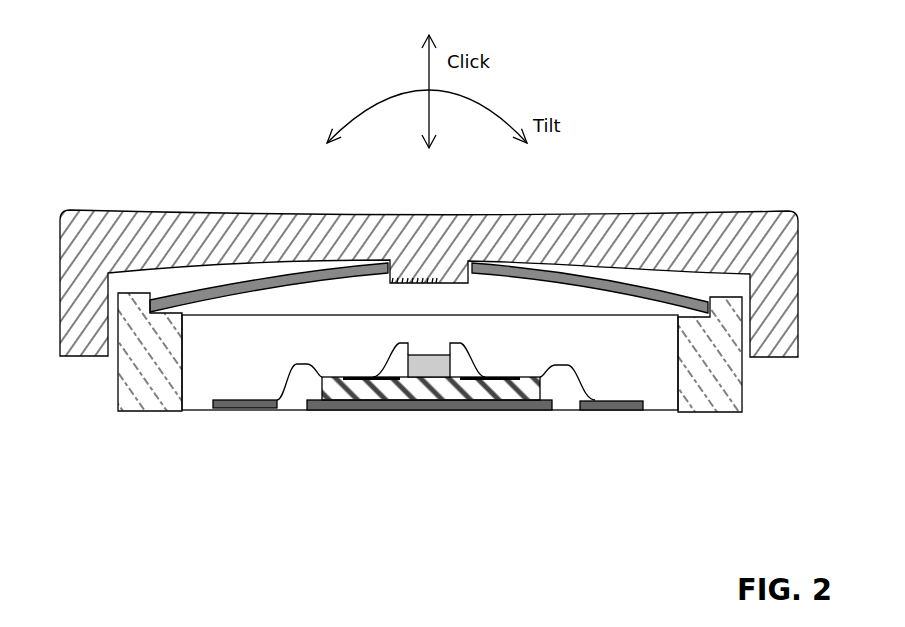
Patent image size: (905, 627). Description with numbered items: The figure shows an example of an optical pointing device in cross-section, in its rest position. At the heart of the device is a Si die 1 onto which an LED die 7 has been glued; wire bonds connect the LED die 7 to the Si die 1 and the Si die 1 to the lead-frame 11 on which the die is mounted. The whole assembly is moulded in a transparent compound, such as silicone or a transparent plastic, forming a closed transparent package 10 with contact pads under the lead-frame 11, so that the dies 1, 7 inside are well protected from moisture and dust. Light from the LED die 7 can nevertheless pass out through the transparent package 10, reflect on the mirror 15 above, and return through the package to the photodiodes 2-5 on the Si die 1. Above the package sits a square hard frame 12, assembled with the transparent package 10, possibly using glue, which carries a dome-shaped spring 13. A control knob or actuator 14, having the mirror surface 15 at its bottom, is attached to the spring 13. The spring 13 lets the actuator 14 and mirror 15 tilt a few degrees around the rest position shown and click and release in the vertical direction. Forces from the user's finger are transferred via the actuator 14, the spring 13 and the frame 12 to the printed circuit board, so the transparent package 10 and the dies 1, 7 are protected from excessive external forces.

The Si die 1 is at (522, 388).
The photodiodes 2-5 is at (388, 378).
The LED die 7 is at (442, 365).
The transparent package 10 is at (213, 358).
The lead-frame 11 is at (265, 403).
The hard frame 12 is at (140, 390).
The dome-shaped spring 13 is at (252, 287).
The actuator 14 is at (448, 243).
The mirror surface 15 is at (403, 282).